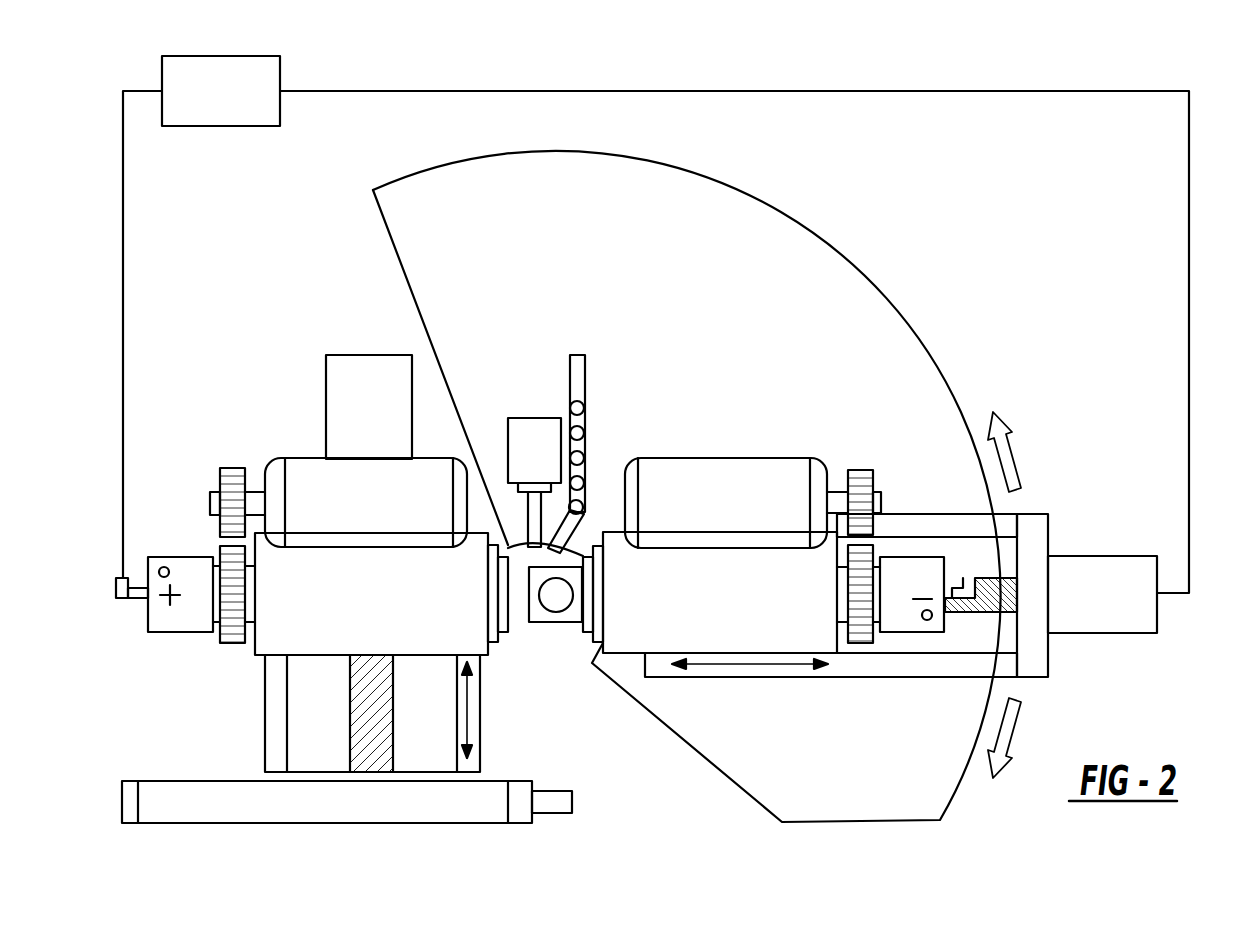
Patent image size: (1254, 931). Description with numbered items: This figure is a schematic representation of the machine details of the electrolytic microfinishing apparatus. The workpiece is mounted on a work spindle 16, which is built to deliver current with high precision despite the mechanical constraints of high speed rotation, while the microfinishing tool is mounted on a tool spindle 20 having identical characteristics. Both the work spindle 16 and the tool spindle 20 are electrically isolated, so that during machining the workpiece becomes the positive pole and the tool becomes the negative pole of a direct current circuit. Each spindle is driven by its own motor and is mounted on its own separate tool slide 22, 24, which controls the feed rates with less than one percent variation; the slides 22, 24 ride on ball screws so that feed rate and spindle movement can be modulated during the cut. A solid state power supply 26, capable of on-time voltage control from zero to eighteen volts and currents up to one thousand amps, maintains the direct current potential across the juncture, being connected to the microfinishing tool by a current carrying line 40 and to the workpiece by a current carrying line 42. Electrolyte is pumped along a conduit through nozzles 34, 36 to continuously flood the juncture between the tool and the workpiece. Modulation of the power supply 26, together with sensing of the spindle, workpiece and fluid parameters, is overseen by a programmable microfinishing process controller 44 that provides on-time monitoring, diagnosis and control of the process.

The work spindle 16 is at (273, 622).
The tool spindle 20 is at (627, 653).
The tool slide 22 is at (477, 712).
The tool slide 24 is at (758, 677).
The solid state power supply 26 is at (245, 56).
The nozzle 34 is at (585, 378).
The nozzle 36 is at (576, 457).
The current carrying line 40 is at (1189, 407).
The current carrying line 42 is at (122, 383).
The microfinishing process controller 44 is at (535, 418).